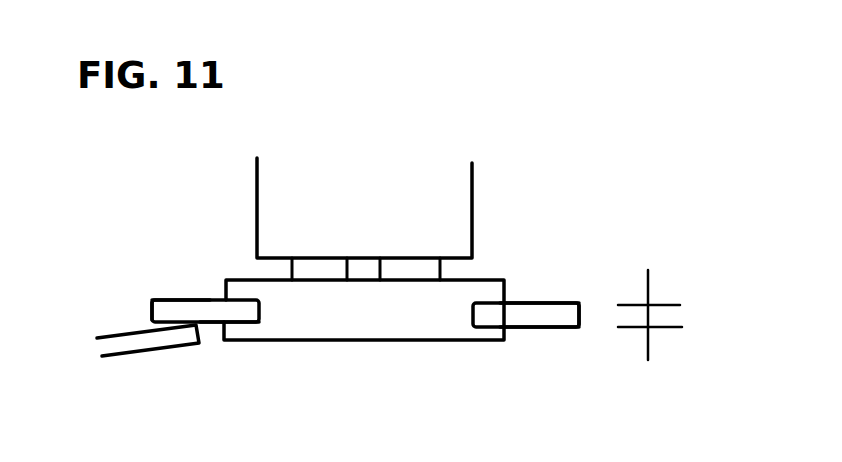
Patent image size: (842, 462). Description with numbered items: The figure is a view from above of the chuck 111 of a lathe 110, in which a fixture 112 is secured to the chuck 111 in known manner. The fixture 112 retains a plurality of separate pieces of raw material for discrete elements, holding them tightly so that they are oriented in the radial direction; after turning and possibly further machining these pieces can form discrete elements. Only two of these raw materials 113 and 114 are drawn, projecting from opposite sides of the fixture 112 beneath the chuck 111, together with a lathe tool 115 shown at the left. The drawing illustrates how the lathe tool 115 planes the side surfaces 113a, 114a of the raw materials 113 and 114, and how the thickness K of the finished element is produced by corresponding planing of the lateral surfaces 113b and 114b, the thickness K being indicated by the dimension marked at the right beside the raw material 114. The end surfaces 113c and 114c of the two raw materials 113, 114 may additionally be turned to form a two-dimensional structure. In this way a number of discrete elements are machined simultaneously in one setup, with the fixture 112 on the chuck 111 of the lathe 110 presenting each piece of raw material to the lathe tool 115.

The lathe 110 is at (487, 178).
The chuck 111 is at (385, 227).
The fixture 112 is at (368, 320).
The raw material 113 is at (210, 262).
The side surface 113a is at (213, 327).
The lateral surface 113b is at (177, 298).
The surface 113c is at (152, 313).
The raw material 114 is at (543, 293).
The side surface 114a is at (542, 330).
The lateral surface 114b is at (567, 303).
The surface 114c is at (583, 325).
The lathe tool 115 is at (145, 354).
The thickness K is at (666, 315).